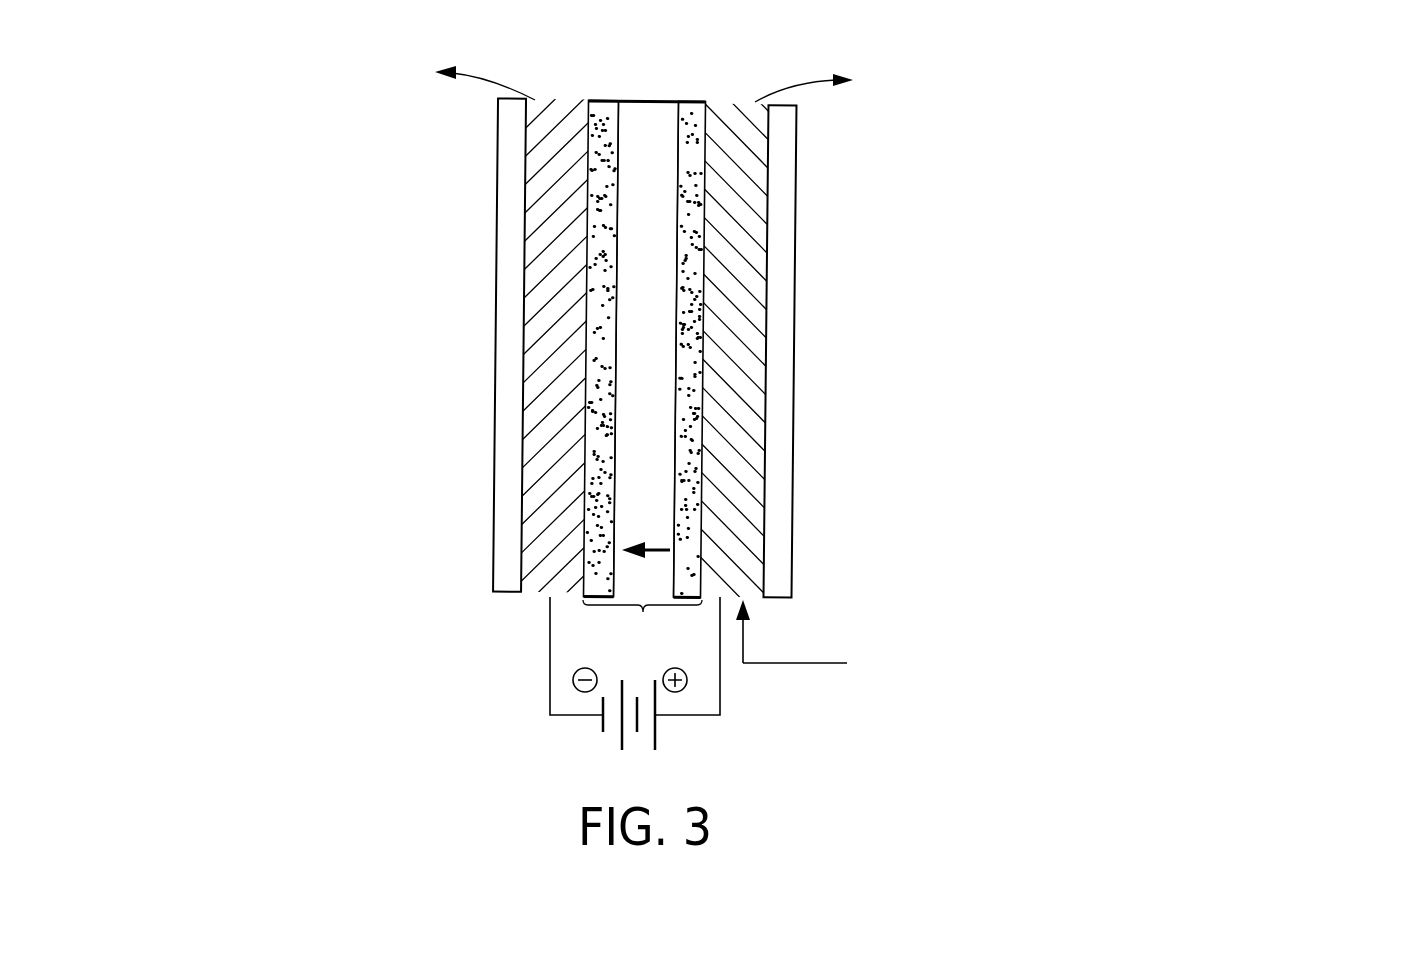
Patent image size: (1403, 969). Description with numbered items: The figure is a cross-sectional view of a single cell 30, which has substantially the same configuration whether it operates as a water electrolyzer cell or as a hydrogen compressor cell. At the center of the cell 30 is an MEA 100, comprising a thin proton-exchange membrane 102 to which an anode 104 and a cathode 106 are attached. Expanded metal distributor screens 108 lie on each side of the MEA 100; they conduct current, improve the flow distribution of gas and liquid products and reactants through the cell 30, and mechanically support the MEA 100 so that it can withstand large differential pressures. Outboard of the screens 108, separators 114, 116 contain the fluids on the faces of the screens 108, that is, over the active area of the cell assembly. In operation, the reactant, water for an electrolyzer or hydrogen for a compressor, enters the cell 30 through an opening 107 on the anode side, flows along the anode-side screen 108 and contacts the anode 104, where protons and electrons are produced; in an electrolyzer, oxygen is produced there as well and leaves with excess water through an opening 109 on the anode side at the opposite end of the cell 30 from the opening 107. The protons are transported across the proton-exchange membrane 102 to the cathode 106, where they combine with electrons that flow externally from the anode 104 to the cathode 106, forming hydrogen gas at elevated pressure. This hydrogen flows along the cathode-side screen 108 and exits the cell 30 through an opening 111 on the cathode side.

The single cell 30 is at (328, 362).
The MEA 100 is at (642, 576).
The proton-exchange membrane 102 is at (647, 100).
The anode 104 is at (687, 100).
The cathode 106 is at (598, 100).
The opening 107 is at (745, 593).
The expanded metal distributor screens 108 is at (540, 318).
The opening 109 is at (737, 105).
The opening 111 is at (543, 100).
The separator 114 is at (795, 222).
The separator 116 is at (497, 210).